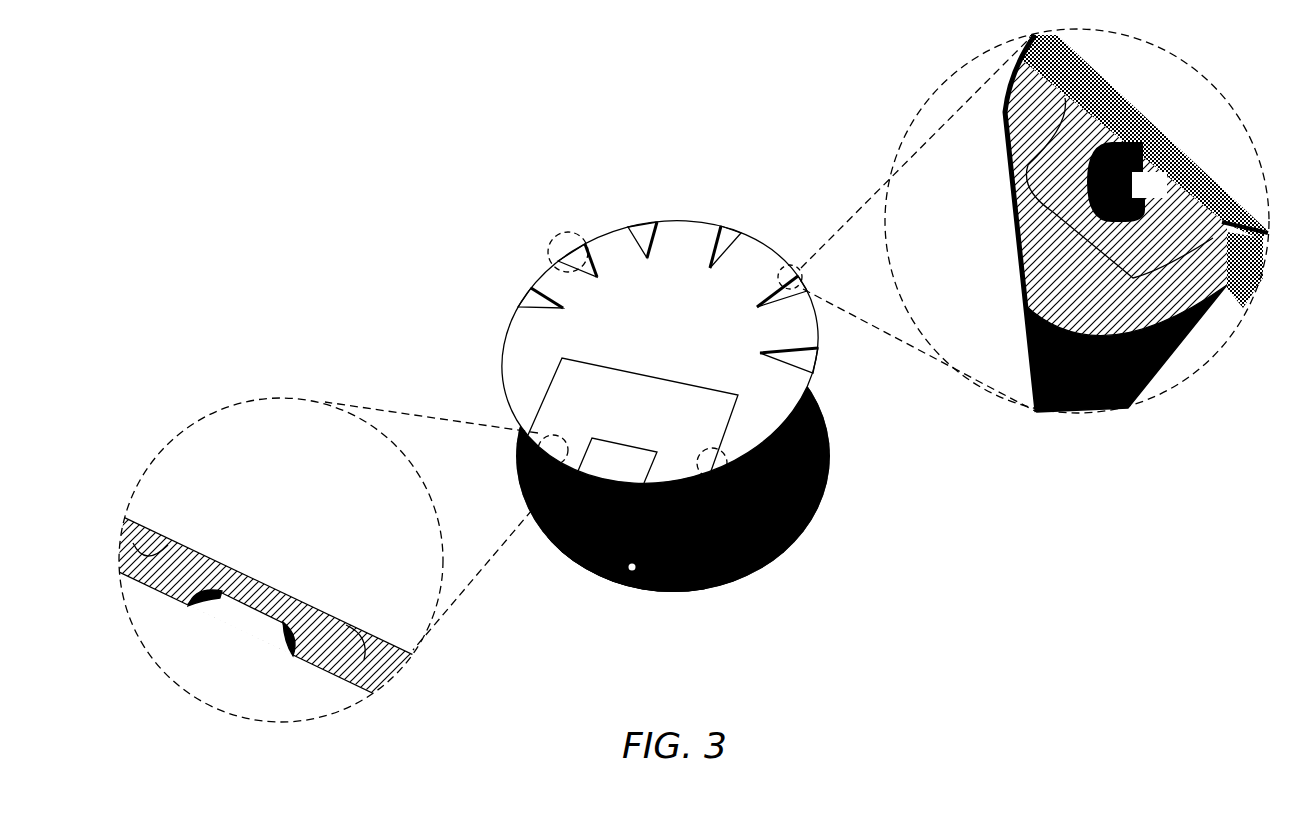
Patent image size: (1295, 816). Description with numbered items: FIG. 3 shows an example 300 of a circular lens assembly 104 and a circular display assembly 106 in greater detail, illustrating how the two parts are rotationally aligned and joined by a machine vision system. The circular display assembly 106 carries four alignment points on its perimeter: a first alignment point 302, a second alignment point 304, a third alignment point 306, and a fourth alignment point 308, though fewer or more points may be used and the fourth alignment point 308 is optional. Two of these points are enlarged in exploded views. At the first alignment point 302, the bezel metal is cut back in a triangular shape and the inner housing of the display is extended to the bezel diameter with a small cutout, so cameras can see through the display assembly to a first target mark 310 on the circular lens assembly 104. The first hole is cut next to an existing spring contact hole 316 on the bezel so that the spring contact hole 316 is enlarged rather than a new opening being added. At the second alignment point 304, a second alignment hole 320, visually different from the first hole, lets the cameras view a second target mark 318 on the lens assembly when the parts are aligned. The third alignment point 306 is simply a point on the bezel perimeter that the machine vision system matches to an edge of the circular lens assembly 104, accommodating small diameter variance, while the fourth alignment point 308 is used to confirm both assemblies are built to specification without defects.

The example of the circular lens assembly and circular display assembly 300 is at (206, 84).
The circular lens assembly 104 is at (817, 497).
The circular display assembly 106 is at (504, 365).
The third alignment point 306 is at (557, 243).
The spring contact hole 316 is at (757, 307).
The fourth alignment point 308 is at (780, 543).
The second alignment point 304 is at (319, 566).
The first alignment point 302 is at (1035, 221).
The second target mark 318 is at (250, 622).
The second alignment hole 320 is at (244, 632).
The first target mark 310 is at (1147, 178).